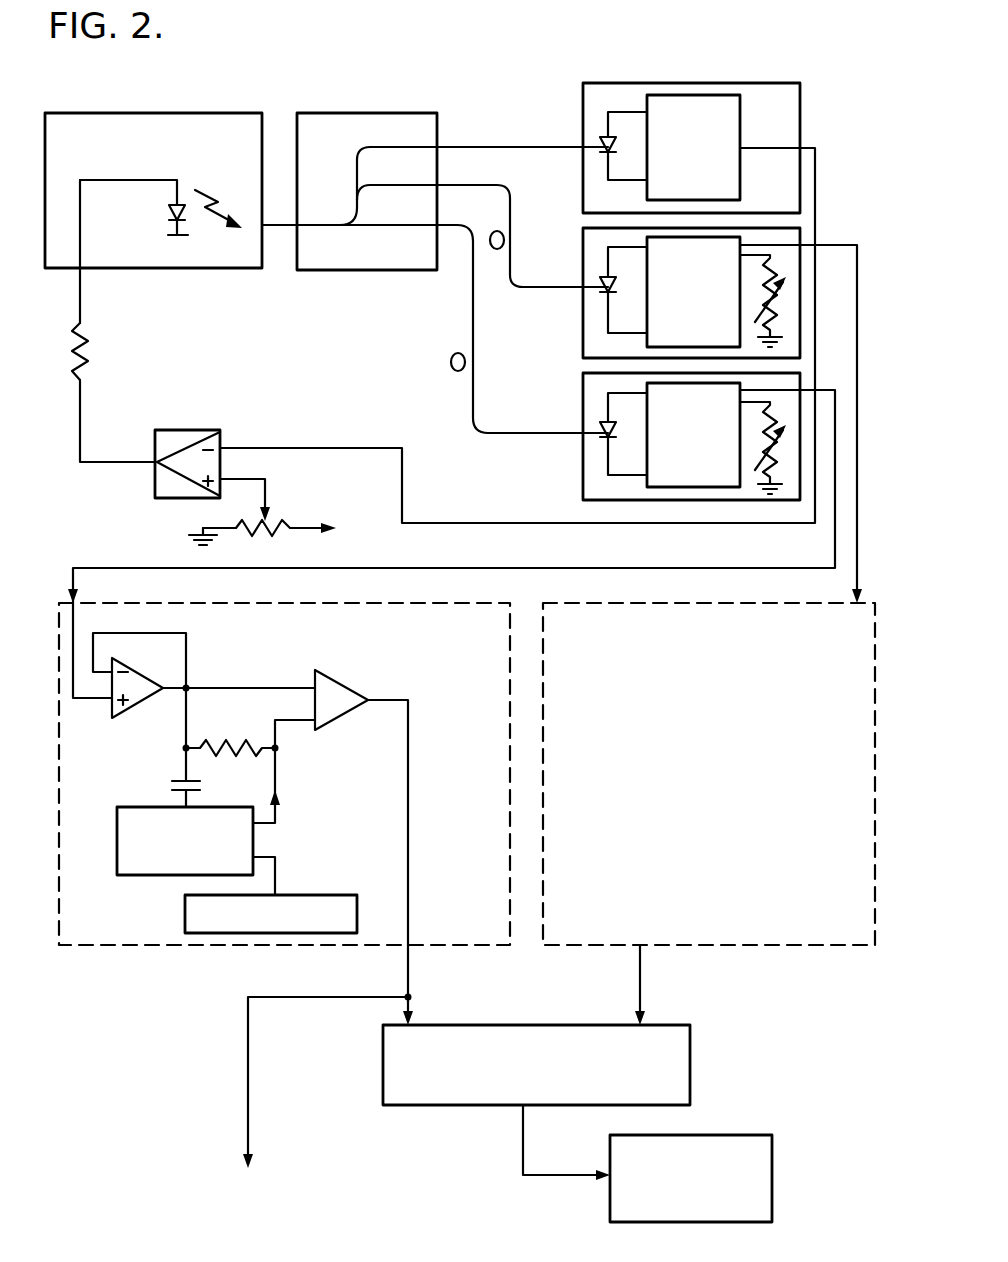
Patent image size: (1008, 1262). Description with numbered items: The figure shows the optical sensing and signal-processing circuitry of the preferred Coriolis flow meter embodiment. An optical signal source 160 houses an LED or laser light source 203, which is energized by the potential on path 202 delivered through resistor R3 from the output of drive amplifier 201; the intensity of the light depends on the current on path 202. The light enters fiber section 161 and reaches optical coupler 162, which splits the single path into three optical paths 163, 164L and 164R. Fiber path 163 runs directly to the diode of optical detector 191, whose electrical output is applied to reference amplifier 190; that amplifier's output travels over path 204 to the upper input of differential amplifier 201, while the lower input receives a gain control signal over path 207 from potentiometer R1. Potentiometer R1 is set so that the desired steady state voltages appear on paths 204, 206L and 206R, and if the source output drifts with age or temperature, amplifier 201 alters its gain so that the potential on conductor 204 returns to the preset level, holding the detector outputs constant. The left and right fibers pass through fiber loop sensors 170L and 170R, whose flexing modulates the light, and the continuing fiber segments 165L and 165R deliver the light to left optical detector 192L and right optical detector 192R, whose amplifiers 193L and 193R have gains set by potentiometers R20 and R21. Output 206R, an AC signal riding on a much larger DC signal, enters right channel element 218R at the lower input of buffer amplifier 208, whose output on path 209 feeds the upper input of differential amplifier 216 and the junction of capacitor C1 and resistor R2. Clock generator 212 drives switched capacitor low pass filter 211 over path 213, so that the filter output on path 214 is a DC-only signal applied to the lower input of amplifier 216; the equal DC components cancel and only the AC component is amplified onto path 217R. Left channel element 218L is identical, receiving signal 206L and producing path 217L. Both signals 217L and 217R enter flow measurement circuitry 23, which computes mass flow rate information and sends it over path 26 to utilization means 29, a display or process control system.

The optical signal source 160 is at (163, 113).
The light source 203 is at (168, 215).
The fiber section 161 is at (286, 226).
The optical coupler 162 is at (377, 113).
The fiber path 163 is at (537, 147).
The optical path 164L is at (512, 200).
The optical path 164R is at (472, 308).
The left fiber output 165L is at (557, 288).
The right fiber output 165R is at (563, 433).
The fiber loop sensor 170L is at (500, 232).
The fiber loop 170R is at (451, 364).
The optical detector 191 is at (776, 83).
The reference amplifier 190 is at (704, 193).
The left optical detector 192L is at (803, 228).
The amplifier 193L is at (716, 334).
The right optical detector 192R is at (803, 482).
The amplifier 193R is at (716, 479).
The potentiometer R20 is at (775, 318).
The potentiometer R21 is at (783, 453).
The path 204 is at (815, 148).
The output 206L is at (858, 275).
The output 206R is at (712, 568).
The path 202 is at (80, 418).
The resistor R3 is at (60, 357).
The drive amplifier 201 is at (172, 437).
The path 207 is at (270, 497).
The potentiometer R1 is at (275, 540).
The right channel element 218R is at (178, 946).
The buffer amplifier 208 is at (137, 697).
The path 209 is at (293, 688).
The differential amplifier 216 is at (350, 688).
The path 214 is at (295, 718).
The resistor R2 is at (230, 739).
The capacitor C1 is at (169, 794).
The switched capacitor low pass filter 211 is at (153, 875).
The path 213 is at (277, 863).
The clock generator 212 is at (185, 912).
The path 217R is at (408, 870).
The left channel element 218L is at (738, 751).
The path 217L is at (640, 993).
The flow measurement circuitry 23 is at (690, 1075).
The path 26 is at (523, 1140).
The utilization means 29 is at (772, 1190).